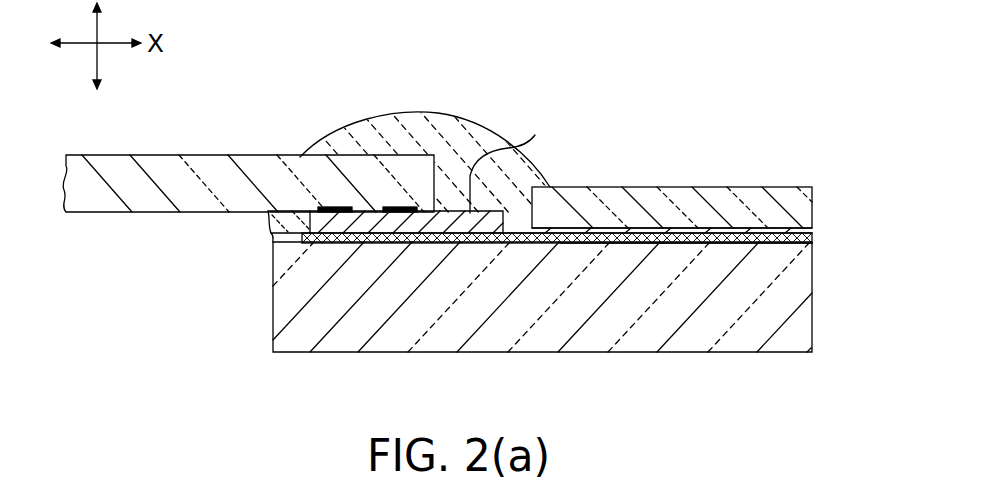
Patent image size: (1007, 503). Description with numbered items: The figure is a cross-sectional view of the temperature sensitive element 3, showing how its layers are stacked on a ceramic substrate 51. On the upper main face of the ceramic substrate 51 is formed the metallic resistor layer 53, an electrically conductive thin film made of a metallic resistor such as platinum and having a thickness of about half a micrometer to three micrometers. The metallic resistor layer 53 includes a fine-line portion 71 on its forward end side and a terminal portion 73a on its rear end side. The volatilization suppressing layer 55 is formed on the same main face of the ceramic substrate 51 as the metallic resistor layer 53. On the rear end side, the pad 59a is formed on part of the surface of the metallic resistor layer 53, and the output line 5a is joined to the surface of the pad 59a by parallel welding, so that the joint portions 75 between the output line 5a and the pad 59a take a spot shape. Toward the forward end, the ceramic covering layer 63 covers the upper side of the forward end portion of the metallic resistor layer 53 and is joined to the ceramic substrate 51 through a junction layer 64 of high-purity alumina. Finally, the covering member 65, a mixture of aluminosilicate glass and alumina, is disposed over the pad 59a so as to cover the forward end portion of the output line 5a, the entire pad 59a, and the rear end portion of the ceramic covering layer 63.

The temperature sensitive element 3 is at (579, 46).
The output line 5a is at (212, 153).
The joint portion 75 is at (400, 207).
The covering member 65 is at (415, 112).
The pad 59a is at (535, 135).
The ceramic covering layer 63 is at (760, 200).
The junction layer 64 is at (778, 227).
The volatilization suppressing layer 55 is at (812, 236).
The ceramic substrate 51 is at (787, 292).
The terminal portion 73a is at (388, 244).
The metallic resistor layer 53 is at (629, 244).
The fine-line portion 71 is at (717, 244).